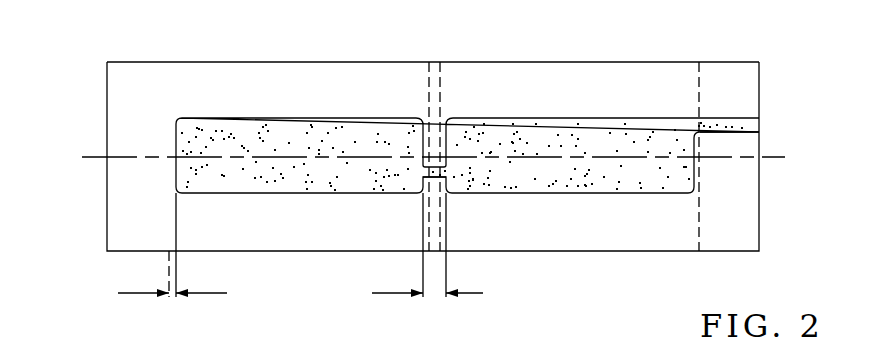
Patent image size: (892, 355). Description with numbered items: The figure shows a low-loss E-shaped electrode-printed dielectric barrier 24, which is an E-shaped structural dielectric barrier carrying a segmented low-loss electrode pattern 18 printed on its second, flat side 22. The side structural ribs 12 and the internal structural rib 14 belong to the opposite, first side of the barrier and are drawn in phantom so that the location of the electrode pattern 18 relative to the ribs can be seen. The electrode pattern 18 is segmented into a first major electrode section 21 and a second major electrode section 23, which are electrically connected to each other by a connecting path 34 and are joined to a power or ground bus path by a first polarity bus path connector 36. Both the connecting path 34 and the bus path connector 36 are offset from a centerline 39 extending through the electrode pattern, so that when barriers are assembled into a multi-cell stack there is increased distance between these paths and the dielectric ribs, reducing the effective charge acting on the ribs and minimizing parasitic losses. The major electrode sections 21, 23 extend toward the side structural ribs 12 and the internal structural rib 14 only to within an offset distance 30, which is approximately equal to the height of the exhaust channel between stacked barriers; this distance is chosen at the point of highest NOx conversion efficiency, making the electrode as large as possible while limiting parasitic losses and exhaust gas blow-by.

The side structural ribs 12 is at (140, 72).
The internal structural rib 14 is at (433, 72).
The segmented low-loss electrode pattern 18 is at (690, 118).
The first major electrode section 21 is at (333, 130).
The second, flat side 22 is at (530, 70).
The second major electrode section 23 is at (565, 178).
The low-loss E-shaped electrode-printed dielectric barrier 24 is at (556, 271).
The offset distance 30 is at (172, 298).
The connecting path 34 is at (431, 172).
The first polarity bus path connector 36 is at (738, 118).
The centerline 39 is at (742, 158).